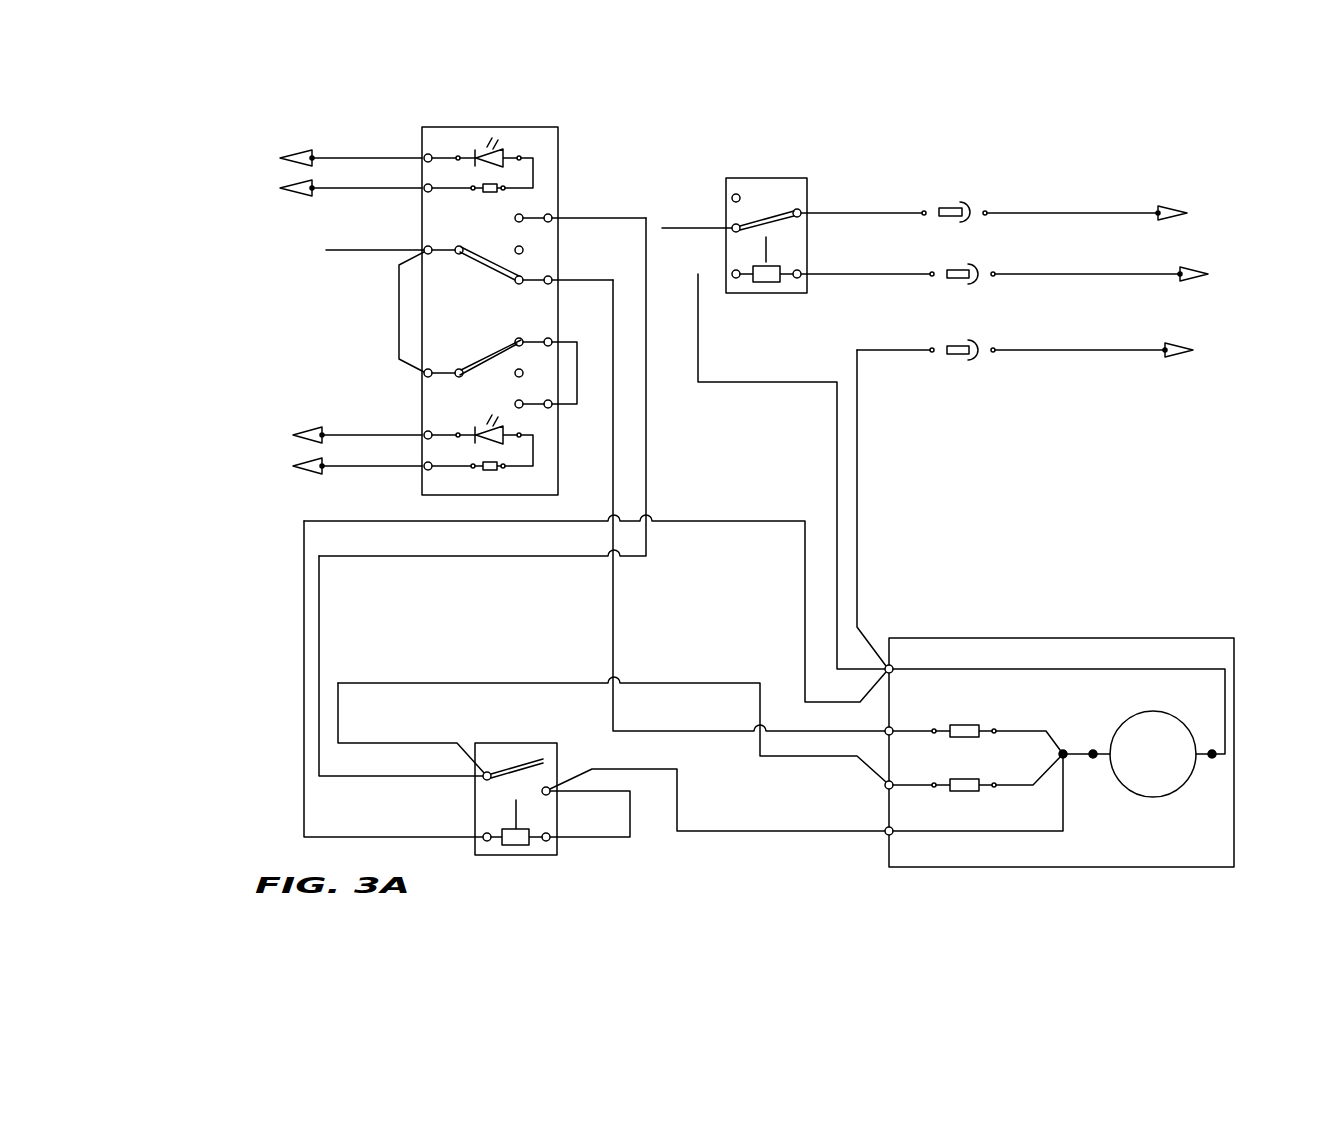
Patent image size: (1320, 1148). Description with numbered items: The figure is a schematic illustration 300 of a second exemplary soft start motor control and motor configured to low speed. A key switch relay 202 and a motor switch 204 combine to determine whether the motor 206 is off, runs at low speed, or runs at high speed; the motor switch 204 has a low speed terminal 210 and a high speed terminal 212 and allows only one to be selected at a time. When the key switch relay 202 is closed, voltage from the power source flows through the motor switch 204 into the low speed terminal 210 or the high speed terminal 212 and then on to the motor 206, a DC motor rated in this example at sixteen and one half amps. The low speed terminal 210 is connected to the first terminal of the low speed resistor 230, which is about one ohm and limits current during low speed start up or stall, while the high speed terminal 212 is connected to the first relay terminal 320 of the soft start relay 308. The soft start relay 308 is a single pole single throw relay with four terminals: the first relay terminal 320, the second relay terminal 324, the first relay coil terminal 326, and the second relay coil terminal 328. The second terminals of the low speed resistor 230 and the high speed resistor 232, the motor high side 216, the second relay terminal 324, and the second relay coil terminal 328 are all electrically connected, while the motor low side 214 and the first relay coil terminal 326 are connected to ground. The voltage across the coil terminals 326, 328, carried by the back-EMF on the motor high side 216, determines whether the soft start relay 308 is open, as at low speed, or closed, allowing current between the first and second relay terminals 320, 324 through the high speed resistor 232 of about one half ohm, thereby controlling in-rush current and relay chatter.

The schematic illustration 300 is at (195, 106).
The motor switch 204 is at (492, 295).
The high speed terminal 212 is at (603, 202).
The low speed terminal 210 is at (597, 267).
The key switch relay 202 is at (763, 233).
The soft start relay 308 is at (511, 780).
The first relay terminal 320 is at (483, 773).
The second relay terminal 324 is at (551, 790).
The first relay coil terminal 326 is at (484, 835).
The second relay coil terminal 328 is at (549, 835).
The motor 206 is at (1059, 752).
The low speed resistor 230 is at (972, 725).
The high speed resistor 232 is at (972, 779).
The motor high side 216 is at (1087, 769).
The motor low side 214 is at (1216, 769).